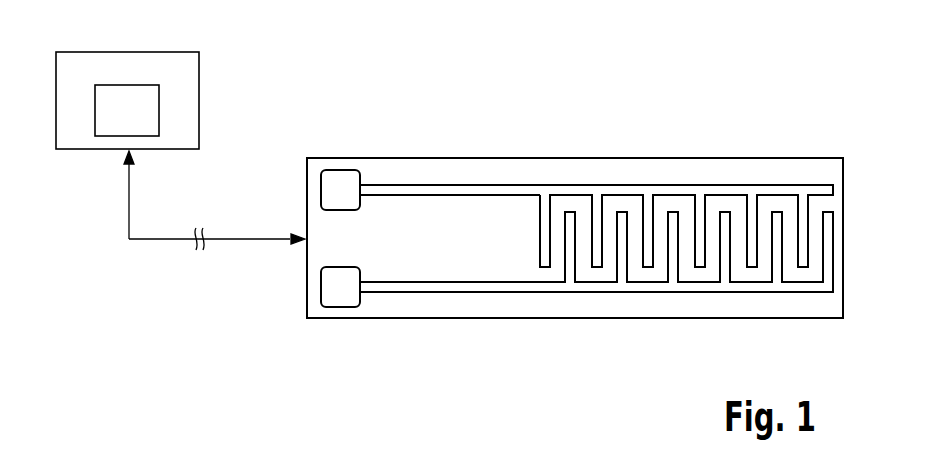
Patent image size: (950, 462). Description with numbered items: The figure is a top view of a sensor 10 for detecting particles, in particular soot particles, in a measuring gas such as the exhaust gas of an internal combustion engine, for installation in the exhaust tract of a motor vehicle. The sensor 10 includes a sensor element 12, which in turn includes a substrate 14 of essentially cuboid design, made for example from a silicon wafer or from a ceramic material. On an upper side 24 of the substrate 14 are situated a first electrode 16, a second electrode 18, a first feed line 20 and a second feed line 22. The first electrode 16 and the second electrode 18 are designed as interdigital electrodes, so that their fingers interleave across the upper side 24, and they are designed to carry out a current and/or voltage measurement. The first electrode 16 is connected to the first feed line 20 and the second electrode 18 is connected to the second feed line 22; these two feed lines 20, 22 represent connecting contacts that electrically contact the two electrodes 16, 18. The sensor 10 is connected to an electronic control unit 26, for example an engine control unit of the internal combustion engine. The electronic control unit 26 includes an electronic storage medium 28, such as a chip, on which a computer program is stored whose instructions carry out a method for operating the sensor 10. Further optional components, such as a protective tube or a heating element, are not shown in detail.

The sensor 10 is at (717, 102).
The sensor element 12 is at (812, 158).
The substrate 14 is at (680, 166).
The first electrode 16 is at (570, 190).
The second electrode 18 is at (622, 220).
The first feed line 20 is at (342, 180).
The second feed line 22 is at (335, 302).
The upper side 24 is at (453, 176).
The electronic control unit 26 is at (200, 67).
The electronic storage medium 28 is at (70, 165).